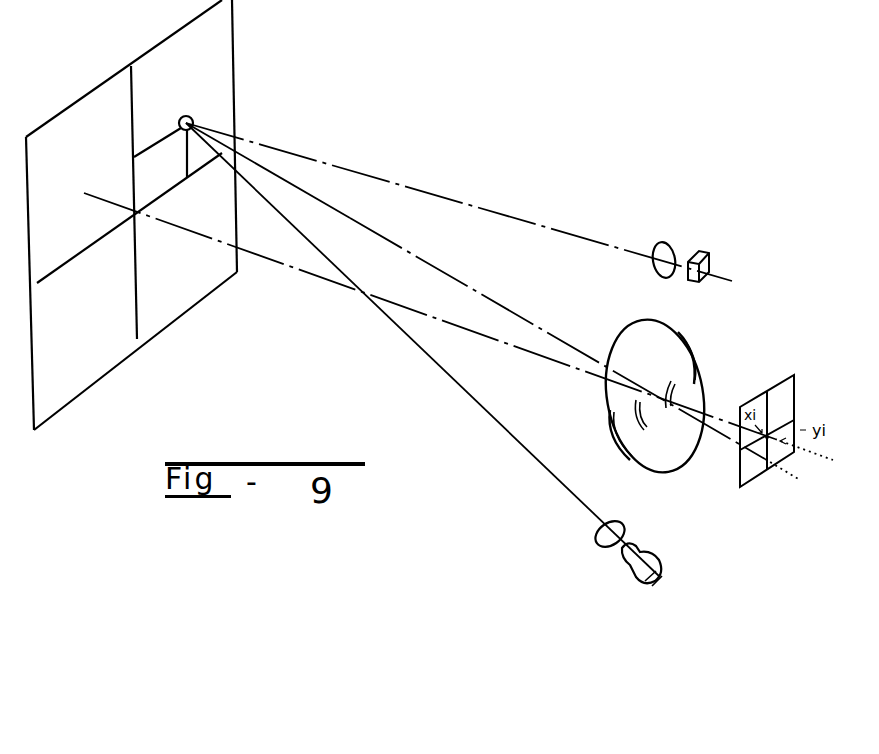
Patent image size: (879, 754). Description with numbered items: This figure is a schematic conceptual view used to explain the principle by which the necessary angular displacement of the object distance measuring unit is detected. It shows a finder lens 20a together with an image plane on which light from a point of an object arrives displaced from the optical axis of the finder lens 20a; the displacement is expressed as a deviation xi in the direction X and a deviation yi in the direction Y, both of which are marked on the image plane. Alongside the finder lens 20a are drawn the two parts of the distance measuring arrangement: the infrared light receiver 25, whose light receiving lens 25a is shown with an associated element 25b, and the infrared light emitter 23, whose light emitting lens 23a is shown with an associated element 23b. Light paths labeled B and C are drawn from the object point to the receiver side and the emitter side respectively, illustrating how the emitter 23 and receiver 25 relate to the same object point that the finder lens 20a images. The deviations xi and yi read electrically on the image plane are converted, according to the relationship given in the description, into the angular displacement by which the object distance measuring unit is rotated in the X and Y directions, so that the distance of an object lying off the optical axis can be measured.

The finder lens 20a is at (703, 362).
The infrared light emitter 23 is at (672, 534).
The light emitting lens 23a is at (626, 527).
The photo detector / lamp 23b is at (646, 552).
The infrared light receiver 25 is at (704, 202).
The light receiving lens 25a is at (668, 242).
The light source element 25b is at (706, 252).
The light beam B is at (505, 213).
The light beam C is at (455, 383).